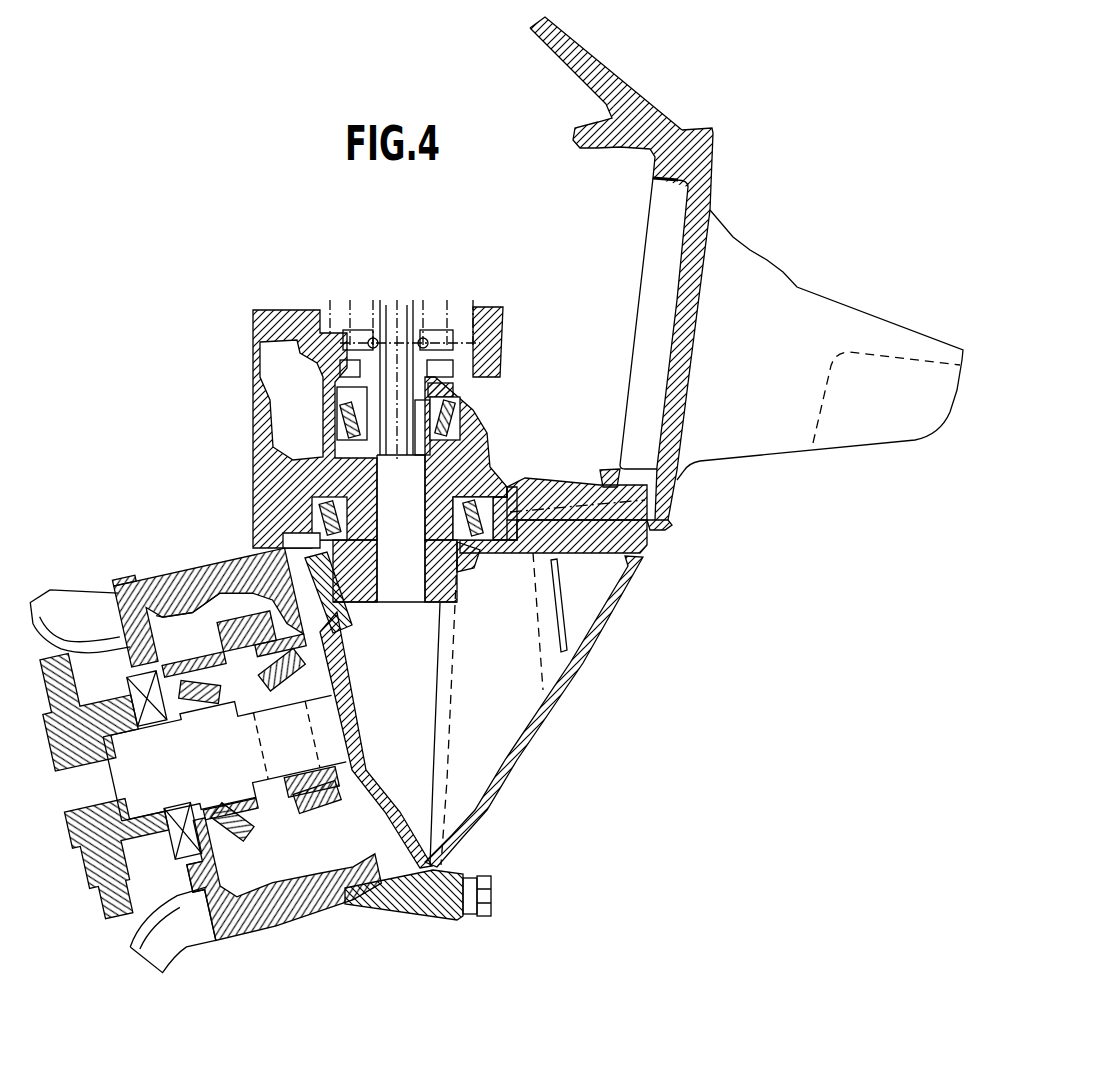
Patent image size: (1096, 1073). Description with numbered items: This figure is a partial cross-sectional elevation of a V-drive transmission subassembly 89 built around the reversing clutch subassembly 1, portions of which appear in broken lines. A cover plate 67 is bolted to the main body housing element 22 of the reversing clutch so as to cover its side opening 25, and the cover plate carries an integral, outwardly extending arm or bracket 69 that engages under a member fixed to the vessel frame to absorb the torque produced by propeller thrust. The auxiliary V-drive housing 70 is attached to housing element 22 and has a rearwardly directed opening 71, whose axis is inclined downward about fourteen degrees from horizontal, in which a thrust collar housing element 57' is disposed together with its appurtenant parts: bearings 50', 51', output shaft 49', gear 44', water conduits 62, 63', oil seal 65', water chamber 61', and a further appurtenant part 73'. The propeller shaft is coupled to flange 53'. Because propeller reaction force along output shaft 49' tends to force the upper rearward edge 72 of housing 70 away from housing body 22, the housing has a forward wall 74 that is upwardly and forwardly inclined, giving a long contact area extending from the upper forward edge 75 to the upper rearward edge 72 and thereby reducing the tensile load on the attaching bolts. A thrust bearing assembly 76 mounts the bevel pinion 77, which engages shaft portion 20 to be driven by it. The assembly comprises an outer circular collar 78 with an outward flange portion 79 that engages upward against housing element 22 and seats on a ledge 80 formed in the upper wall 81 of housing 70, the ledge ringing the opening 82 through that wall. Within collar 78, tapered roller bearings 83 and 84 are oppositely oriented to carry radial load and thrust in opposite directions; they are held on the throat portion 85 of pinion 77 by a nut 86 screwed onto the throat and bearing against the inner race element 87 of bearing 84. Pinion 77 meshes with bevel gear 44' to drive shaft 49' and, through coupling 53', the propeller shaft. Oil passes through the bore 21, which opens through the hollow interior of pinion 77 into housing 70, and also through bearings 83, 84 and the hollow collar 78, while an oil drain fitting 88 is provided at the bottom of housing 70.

The reversing clutch subassembly 1 is at (592, 64).
The cover plate 67 is at (717, 171).
The arm or bracket 69 is at (773, 260).
The upper forward edge 75 is at (647, 526).
The side opening 25 is at (623, 477).
The main body housing element 22 is at (552, 480).
The outward flange portion 79 is at (517, 528).
The ledge 80 is at (510, 527).
The forward wall 74 is at (578, 667).
The upper wall 81 is at (579, 552).
The bevel gear 44' is at (267, 740).
The V-drive transmission subassembly 89 is at (403, 907).
The oil drain fitting 88 is at (494, 891).
The upper rearward edge 72 is at (253, 533).
The bore 21 is at (400, 378).
The shaft portion 20 is at (388, 441).
The throat portion 85 is at (424, 417).
The thrust bearing assembly 76 is at (483, 440).
The outer circular collar 78 is at (490, 462).
The nut 86 is at (450, 391).
The inner race element 87 is at (448, 415).
The tapered roller bearing 84 is at (350, 414).
The opening 82 is at (507, 540).
The tapered roller bearing 83 is at (480, 553).
The bevel pinion 77 is at (434, 602).
The bearing 50' is at (332, 599).
The auxiliary V-drive housing 70 is at (250, 544).
The rearwardly directed opening 71 is at (217, 588).
The bearing cup 73' is at (251, 628).
The water chamber 61' is at (278, 784).
The thrust collar housing element 57' is at (227, 928).
The bearing 51' is at (259, 734).
The oil seal 65' is at (125, 698).
The output shaft 49' is at (166, 839).
The flange 53' is at (107, 795).
The water conduit 62 is at (73, 600).
The water conduit 63' is at (171, 944).